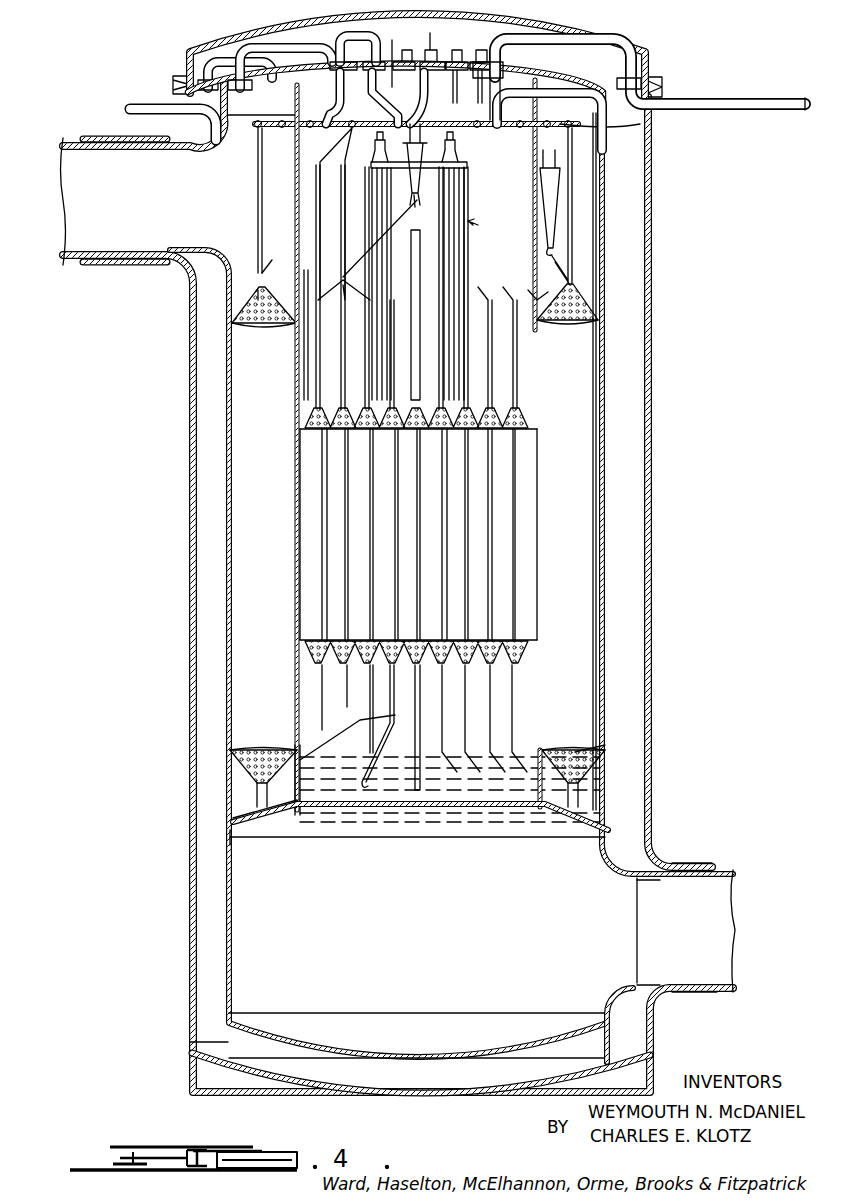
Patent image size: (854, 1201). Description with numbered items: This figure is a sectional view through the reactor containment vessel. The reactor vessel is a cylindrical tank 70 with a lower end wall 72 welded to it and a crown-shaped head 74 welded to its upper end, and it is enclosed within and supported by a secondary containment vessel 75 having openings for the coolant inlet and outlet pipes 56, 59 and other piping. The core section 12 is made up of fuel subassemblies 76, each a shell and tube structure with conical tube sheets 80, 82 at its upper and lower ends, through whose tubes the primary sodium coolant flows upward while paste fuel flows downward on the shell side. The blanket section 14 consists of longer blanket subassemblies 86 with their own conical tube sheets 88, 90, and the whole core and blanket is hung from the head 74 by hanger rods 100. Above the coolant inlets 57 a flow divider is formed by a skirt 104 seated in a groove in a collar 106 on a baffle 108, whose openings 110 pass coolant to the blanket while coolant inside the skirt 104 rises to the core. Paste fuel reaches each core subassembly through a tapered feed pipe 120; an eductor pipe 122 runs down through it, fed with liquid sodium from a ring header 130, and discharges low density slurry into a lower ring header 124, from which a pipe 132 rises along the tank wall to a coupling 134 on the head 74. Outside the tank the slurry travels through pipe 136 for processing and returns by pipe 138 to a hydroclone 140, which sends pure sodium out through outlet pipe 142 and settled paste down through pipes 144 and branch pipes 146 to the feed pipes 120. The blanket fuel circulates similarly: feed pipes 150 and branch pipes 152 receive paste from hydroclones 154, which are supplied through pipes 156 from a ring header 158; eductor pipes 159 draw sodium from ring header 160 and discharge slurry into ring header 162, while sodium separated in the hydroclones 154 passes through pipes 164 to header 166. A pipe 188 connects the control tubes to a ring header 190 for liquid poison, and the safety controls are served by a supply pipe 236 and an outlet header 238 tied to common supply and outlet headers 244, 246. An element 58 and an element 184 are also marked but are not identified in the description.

The core section 12 is at (302, 682).
The blanket section 14 is at (215, 601).
The coolant inlet pipe 56 is at (728, 870).
The coolant inlets 57 is at (637, 878).
The inlet nozzle 58 is at (205, 248).
The coolant outlet pipe 59 is at (62, 147).
The cylindrical tank 70 is at (610, 593).
The lower end wall 72 is at (305, 1040).
The crown-shaped head 74 is at (560, 78).
The secondary containment vessel 75 is at (655, 506).
The fuel subassemblies 76 is at (360, 492).
The conical tube sheet 80 is at (320, 412).
The conical tube sheet 82 is at (305, 655).
The blanket subassemblies 86 is at (278, 564).
The conical tube sheet 88 is at (235, 318).
The conical tube sheet 90 is at (232, 768).
The hanger rods 100 is at (423, 245).
The skirt 104 is at (305, 815).
The collar 106 is at (290, 830).
The baffle 108 is at (268, 830).
The openings 110 is at (252, 828).
The tapered feed pipe 120 is at (340, 372).
The eductor pipe 122 is at (305, 222).
The ring header 124 is at (525, 770).
The ring header 130 is at (350, 130).
The pipe 132 is at (597, 633).
The coupling 134 is at (470, 85).
The pipe 136 is at (740, 100).
The pipe 138 is at (431, 50).
The hydroclone 140 is at (425, 178).
The outlet pipe 142 is at (392, 52).
The pipes 144 is at (428, 208).
The branch pipes 146 is at (322, 345).
The feed pipes 150 is at (255, 280).
The branch pipes 152 is at (545, 262).
The hydroclones 154 is at (575, 208).
The pipe 156 is at (450, 168).
The ring header 158 is at (459, 158).
The eductor pipe 159 is at (263, 170).
The ring header 160 is at (635, 127).
The ring header 162 is at (590, 800).
The pipes 164 is at (553, 162).
The header 166 is at (575, 142).
The flow arrow 184 is at (492, 220).
The pipe 188 is at (390, 760).
The ring header 190 is at (465, 800).
The supply pipe 236 is at (320, 740).
The outlet header 238 is at (300, 178).
The common supply header 244 is at (300, 770).
The common outlet header 246 is at (432, 124).